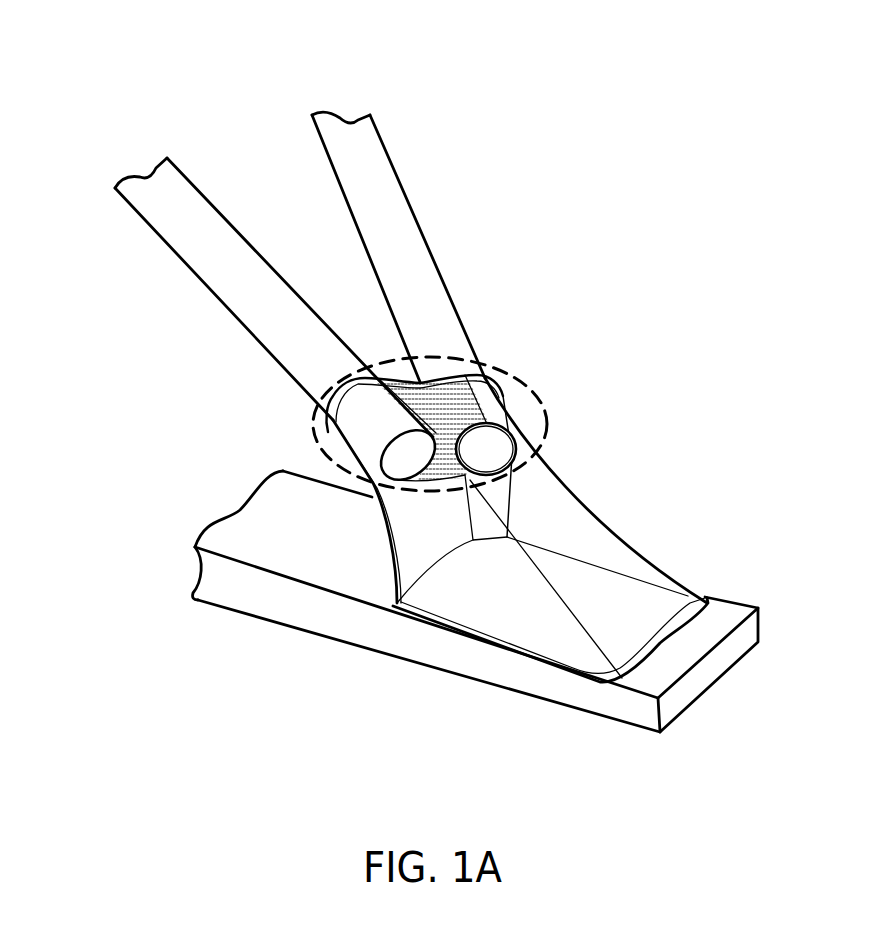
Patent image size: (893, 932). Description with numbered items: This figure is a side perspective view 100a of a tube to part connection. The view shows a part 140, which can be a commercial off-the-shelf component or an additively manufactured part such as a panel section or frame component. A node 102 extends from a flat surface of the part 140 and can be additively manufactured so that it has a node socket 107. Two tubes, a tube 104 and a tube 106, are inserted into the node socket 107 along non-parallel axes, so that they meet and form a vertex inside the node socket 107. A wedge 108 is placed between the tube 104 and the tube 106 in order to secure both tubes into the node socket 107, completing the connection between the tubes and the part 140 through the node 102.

The side perspective view 100a is at (203, 96).
The node 102 is at (517, 493).
The tube 104 is at (308, 317).
The tube 106 is at (420, 237).
The node socket 107 is at (537, 388).
The wedge 108 is at (443, 398).
The part 140 is at (407, 640).